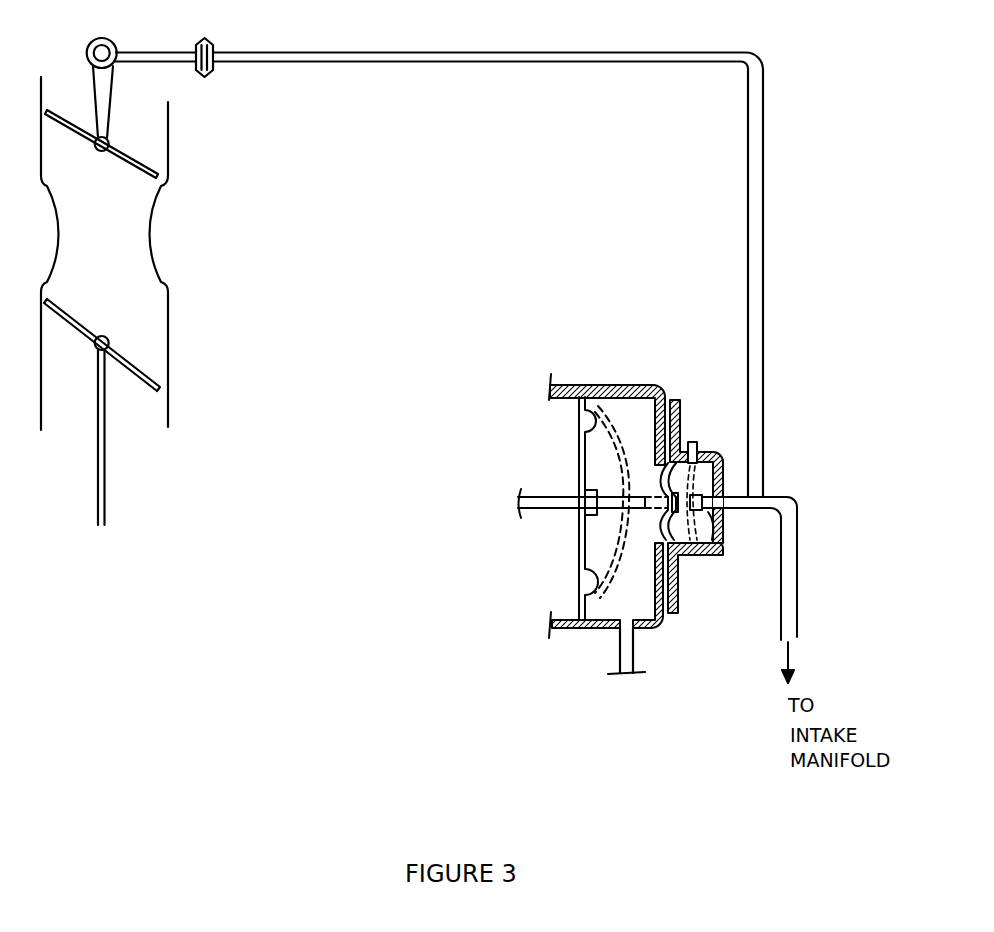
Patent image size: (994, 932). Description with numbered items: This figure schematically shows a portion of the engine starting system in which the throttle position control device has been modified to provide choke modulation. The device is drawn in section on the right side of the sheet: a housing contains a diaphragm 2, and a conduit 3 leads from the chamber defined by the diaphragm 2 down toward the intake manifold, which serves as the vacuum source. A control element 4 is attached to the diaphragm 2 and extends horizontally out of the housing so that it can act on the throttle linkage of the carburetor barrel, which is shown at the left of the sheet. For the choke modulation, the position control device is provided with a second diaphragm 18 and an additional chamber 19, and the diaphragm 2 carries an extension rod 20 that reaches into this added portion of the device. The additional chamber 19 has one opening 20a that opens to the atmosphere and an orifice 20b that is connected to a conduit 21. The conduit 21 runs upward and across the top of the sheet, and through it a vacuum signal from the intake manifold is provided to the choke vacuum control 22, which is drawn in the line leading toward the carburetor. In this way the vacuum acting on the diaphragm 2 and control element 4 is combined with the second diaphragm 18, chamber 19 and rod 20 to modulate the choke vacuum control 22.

The diaphragm 2 is at (575, 547).
The conduit 3 is at (635, 652).
The control element 4 is at (542, 495).
The second diaphragm 18 is at (705, 450).
The additional chamber 19 is at (710, 555).
The extension rod 20 is at (617, 492).
The opening 20a is at (692, 441).
The orifice 20b is at (700, 537).
The conduit 21 is at (762, 293).
The choke vacuum control 22 is at (208, 38).